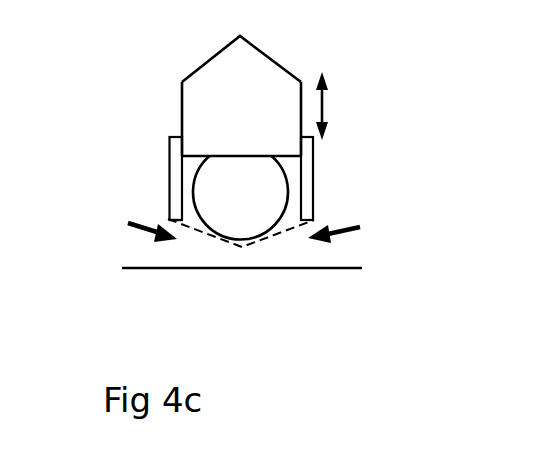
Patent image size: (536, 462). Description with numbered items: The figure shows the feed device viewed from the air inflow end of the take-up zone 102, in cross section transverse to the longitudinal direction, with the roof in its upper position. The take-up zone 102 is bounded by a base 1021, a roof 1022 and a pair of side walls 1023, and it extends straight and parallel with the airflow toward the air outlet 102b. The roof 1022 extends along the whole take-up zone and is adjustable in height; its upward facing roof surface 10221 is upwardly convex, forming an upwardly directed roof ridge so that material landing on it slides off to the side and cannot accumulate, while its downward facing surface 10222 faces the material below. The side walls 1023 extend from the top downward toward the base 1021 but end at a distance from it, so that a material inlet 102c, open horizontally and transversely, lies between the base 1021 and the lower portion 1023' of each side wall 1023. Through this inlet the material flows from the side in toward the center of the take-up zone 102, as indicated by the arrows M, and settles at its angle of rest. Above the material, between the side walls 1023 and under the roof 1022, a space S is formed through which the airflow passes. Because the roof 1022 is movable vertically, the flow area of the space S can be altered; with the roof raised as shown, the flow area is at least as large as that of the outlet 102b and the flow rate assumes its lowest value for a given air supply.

The take-up zone 102 is at (282, 253).
The base 1021 is at (258, 270).
The air outlet 102b is at (273, 205).
The material inlet 102c is at (178, 254).
The roof 1022 is at (272, 110).
The roof surface 10221 is at (272, 47).
The downward facing surface 10222 is at (302, 172).
The side walls 1023 is at (241, 167).
The lower portion of the side wall 1023' is at (119, 193).
The arrows M is at (240, 231).
The space S is at (290, 223).